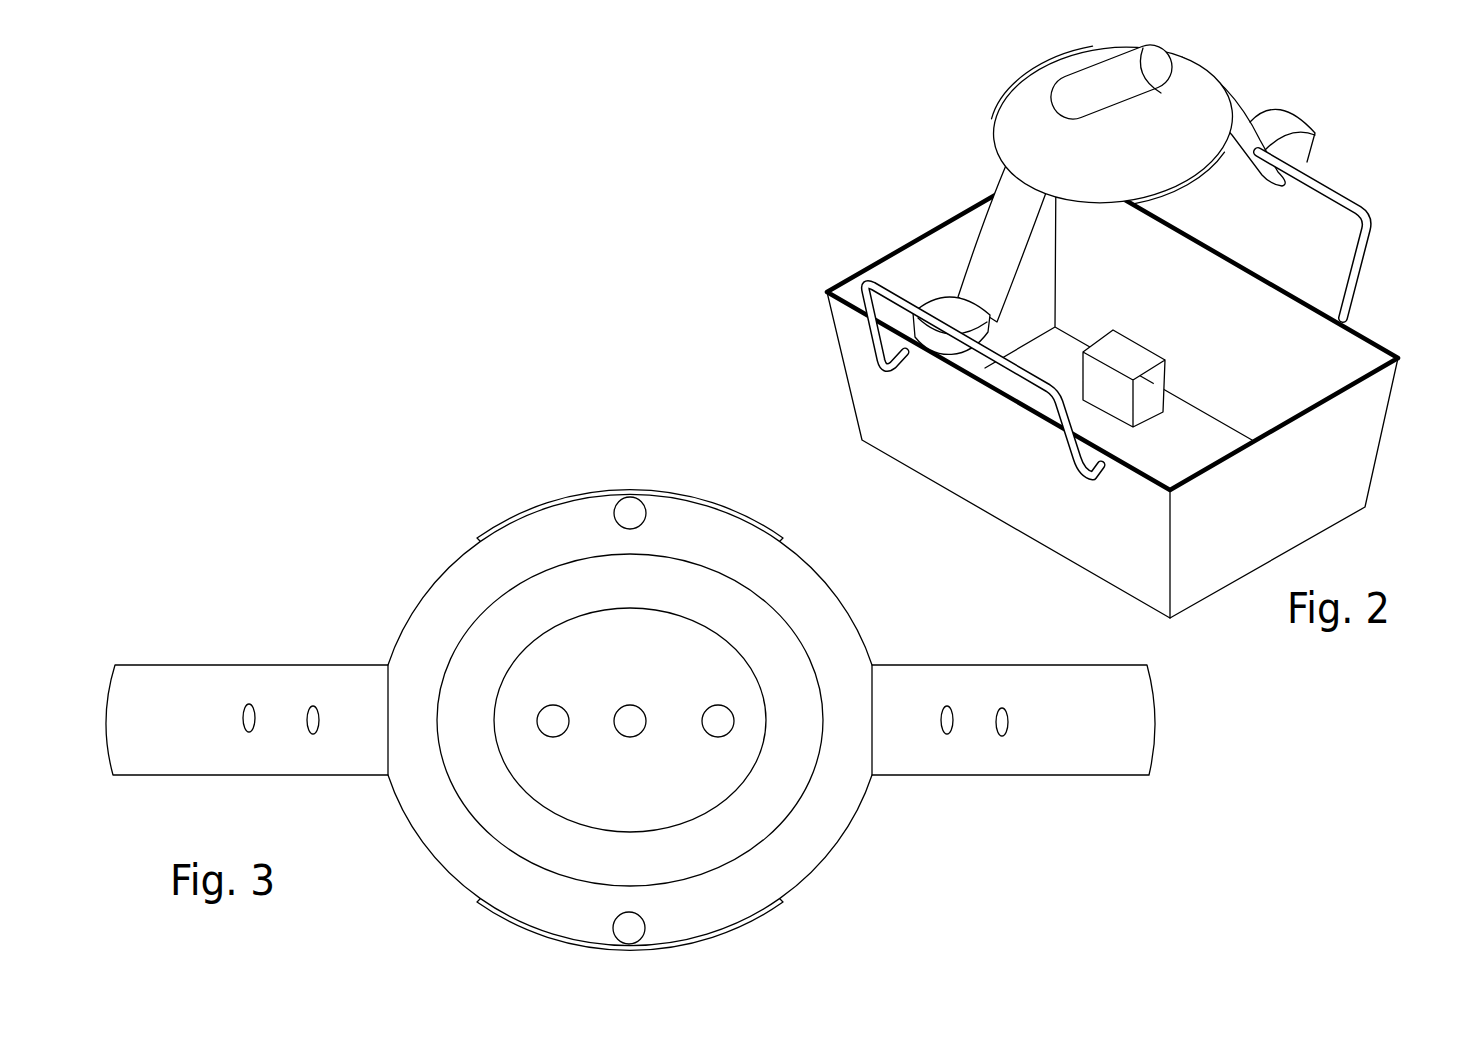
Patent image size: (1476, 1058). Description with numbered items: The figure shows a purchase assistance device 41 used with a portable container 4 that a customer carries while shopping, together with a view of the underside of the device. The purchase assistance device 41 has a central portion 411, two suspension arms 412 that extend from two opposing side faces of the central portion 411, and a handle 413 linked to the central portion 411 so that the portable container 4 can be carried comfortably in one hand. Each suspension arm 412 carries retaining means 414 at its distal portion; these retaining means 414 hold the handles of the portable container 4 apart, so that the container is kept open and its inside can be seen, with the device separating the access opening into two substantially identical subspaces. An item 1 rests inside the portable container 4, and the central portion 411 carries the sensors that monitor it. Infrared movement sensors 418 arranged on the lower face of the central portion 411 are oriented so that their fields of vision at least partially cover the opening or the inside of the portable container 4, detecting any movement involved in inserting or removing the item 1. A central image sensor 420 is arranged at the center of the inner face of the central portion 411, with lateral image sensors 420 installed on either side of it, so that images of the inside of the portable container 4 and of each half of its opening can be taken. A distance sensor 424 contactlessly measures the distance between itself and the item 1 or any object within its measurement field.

In FIG. 2, the item 1 is at (1153, 397).
In FIG. 2, the portable container 4 is at (1385, 432).
In FIG. 2, the purchase assistance device 41 is at (1107, 201).
In FIG. 3, the purchase assistance device 41 is at (640, 710).
In FIG. 2, the central portion 411 is at (1020, 85).
In FIG. 3, the central portion 411 is at (843, 845).
In FIG. 2, the suspension arm 412 is at (953, 283).
In FIG. 3, the suspension arm 412 is at (127, 777).
In FIG. 2, the handle 413 is at (1165, 62).
In FIG. 2, the retaining means 414 is at (980, 325).
In FIG. 3, the movement sensor 418 is at (713, 737).
In FIG. 3, the image sensor 420 is at (652, 502).
In FIG. 3, the distance sensor 424 is at (249, 732).